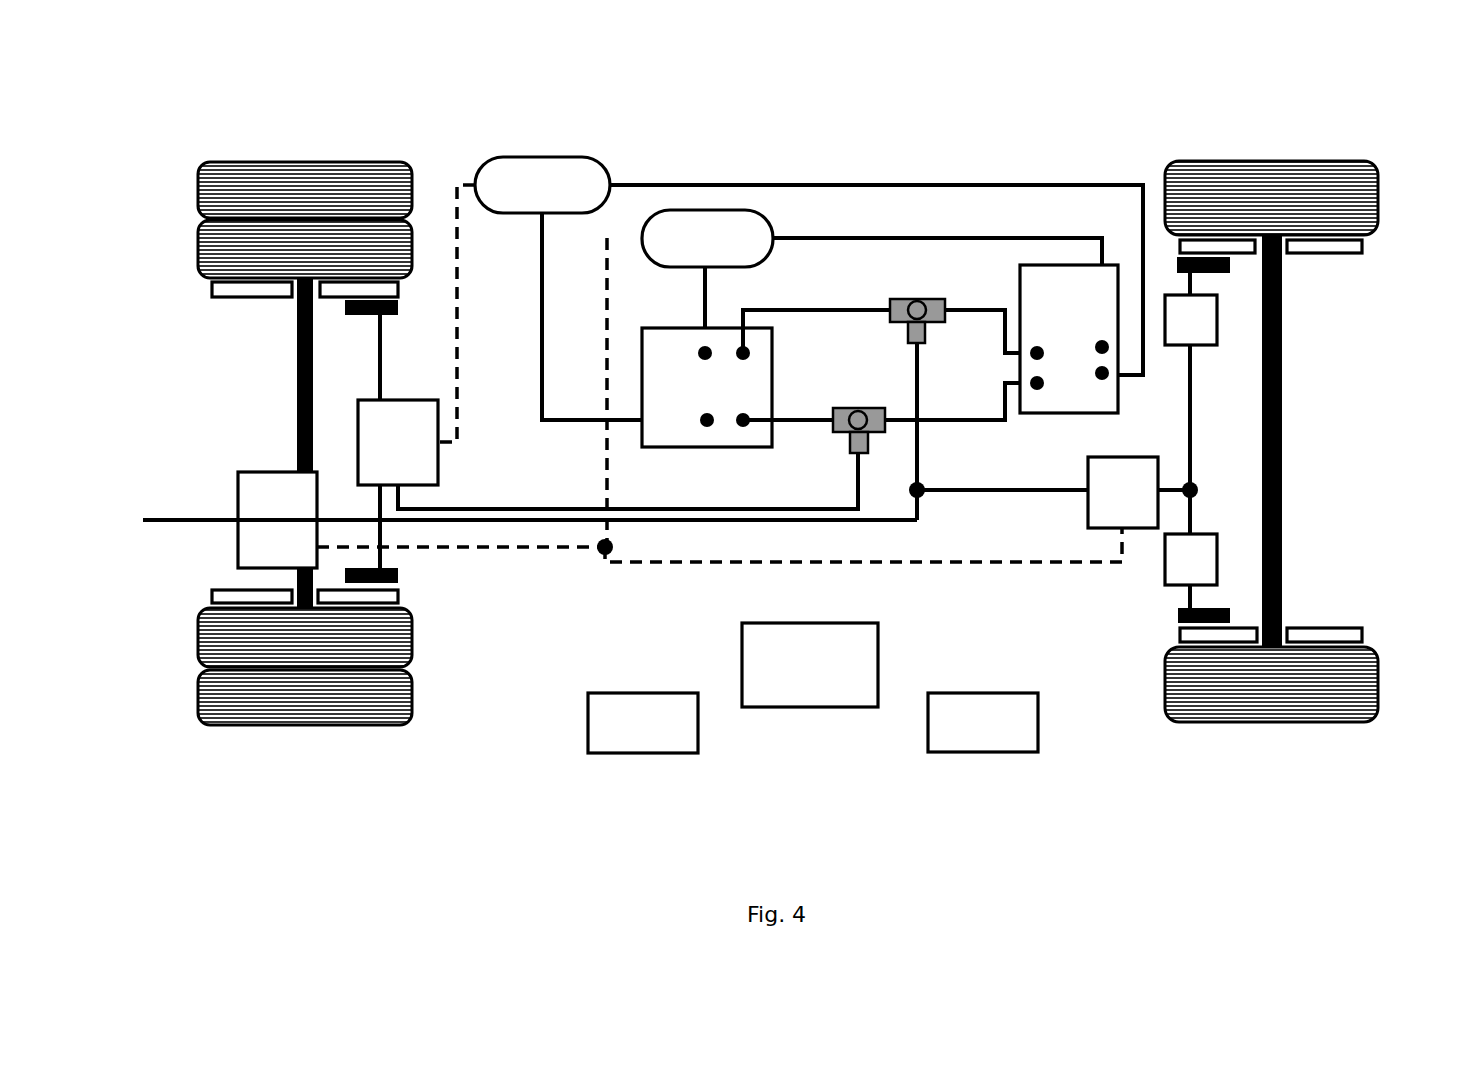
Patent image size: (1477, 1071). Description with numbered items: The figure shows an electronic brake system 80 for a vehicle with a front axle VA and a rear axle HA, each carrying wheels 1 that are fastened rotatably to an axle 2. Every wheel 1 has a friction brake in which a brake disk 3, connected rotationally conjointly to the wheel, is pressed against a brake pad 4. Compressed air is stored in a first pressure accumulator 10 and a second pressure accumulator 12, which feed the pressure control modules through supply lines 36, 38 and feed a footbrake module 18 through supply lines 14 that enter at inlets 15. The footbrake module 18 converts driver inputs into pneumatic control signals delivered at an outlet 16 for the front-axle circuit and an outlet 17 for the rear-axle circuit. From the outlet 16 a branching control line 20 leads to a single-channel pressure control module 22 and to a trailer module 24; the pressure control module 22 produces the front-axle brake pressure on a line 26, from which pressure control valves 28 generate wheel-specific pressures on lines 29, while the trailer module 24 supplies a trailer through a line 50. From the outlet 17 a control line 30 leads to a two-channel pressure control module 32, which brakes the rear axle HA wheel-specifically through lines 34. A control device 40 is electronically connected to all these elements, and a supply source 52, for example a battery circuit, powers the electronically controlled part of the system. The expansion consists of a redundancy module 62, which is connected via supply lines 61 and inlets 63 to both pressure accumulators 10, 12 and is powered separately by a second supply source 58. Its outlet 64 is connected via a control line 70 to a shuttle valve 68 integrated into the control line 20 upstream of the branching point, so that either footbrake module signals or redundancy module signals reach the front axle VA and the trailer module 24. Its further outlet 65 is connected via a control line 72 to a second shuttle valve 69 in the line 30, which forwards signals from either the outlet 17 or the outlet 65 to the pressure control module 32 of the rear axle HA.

The wheel 1 is at (290, 162).
The axle 2 is at (297, 360).
The brake disk 3 is at (230, 298).
The brake pad 4 is at (352, 318).
The first pressure accumulator 10 is at (708, 210).
The second pressure accumulator 12 is at (540, 157).
The supply line 14 is at (1000, 237).
The inlet 15 is at (1102, 340).
The outlet 16 is at (1037, 345).
The outlet 17 is at (1010, 388).
The footbrake module 18 is at (1085, 415).
The branching control line 20 is at (1005, 330).
The pressure control module 22 is at (1088, 500).
The trailer module 24 is at (238, 545).
The line 26 is at (1190, 490).
The pressure control valve 28 is at (1200, 345).
The line 29 is at (1215, 298).
The control line 30 is at (928, 420).
The pressure control module 32 is at (437, 470).
The line 34 is at (380, 370).
The supply line 36 is at (605, 562).
The supply line 38 is at (455, 185).
The control device 40 is at (803, 707).
The line 50 is at (150, 525).
The supply source 52 is at (1028, 752).
The second supply source 58 is at (605, 753).
The supply line 61 is at (542, 330).
The redundancy module 62 is at (700, 448).
The inlet 63 is at (700, 352).
The outlet 64 is at (745, 355).
The outlet 65 is at (750, 428).
The shuttle valve 68 is at (915, 300).
The second shuttle valve 69 is at (865, 408).
The control line 70 is at (822, 312).
The control line 72 is at (853, 453).
The brake system 80 is at (483, 748).
The rear axle HA is at (165, 683).
The front axle VA is at (1355, 768).